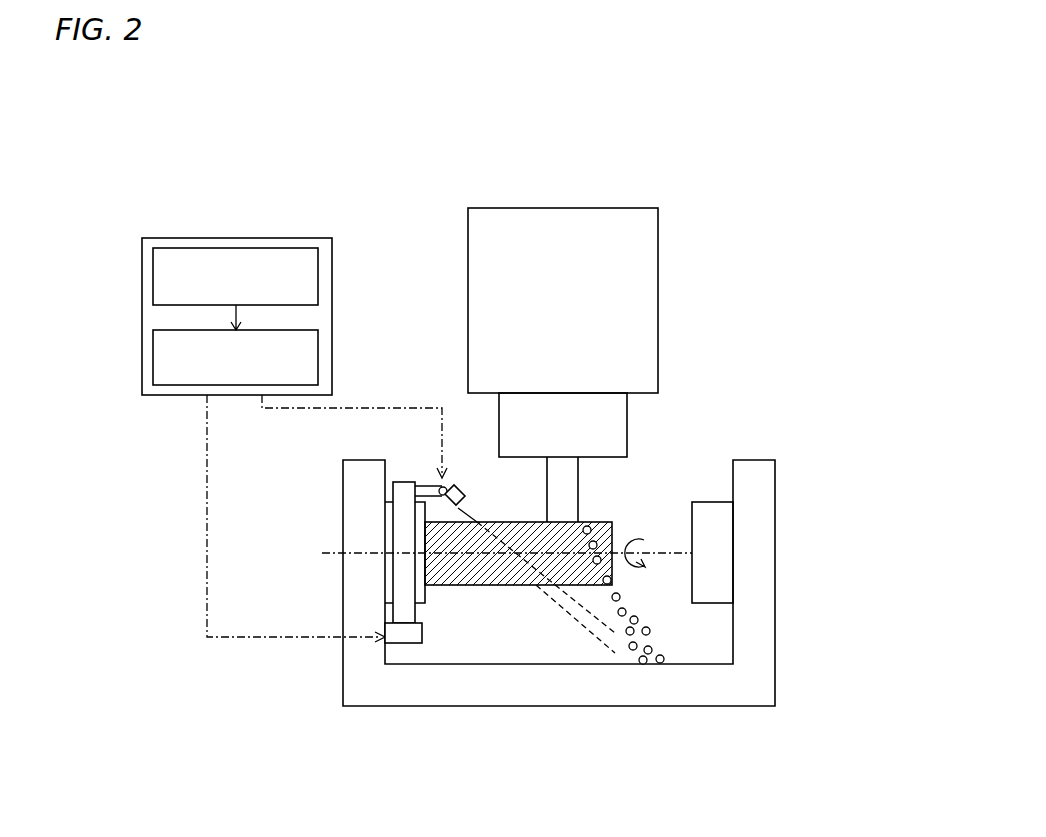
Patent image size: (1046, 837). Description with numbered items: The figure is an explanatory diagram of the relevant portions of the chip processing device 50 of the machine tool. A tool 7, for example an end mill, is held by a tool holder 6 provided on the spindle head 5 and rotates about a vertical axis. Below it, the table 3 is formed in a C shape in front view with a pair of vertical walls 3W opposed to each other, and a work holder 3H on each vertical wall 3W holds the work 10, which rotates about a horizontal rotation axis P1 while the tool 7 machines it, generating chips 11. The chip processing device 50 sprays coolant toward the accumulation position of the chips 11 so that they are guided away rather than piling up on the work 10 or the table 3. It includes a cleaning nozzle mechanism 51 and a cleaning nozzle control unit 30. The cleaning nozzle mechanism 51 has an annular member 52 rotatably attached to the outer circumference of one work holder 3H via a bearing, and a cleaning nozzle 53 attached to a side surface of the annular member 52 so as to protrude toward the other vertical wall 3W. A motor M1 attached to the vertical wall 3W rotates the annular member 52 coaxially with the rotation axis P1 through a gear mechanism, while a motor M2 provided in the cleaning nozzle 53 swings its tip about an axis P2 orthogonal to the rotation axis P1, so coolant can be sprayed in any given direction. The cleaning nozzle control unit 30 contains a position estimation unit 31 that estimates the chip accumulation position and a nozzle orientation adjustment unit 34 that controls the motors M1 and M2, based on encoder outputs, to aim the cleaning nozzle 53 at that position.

The table 3 is at (562, 606).
The vertical walls 3W is at (347, 500).
The work holder 3H is at (387, 598).
The spindle head 5 is at (658, 268).
The tool holder 6 is at (627, 430).
The tool 7 is at (578, 490).
The work 10 is at (513, 585).
The chips 11 is at (638, 618).
The cleaning nozzle control unit 30 is at (261, 284).
The position estimation unit 31 is at (318, 277).
The nozzle orientation adjustment unit 34 is at (318, 354).
The chip processing device 50 is at (294, 407).
The cleaning nozzle mechanism 51 is at (419, 460).
The annular member 52 is at (405, 480).
The cleaning nozzle 53 is at (471, 474).
The motor M1 is at (422, 632).
The motor M2 is at (447, 481).
The rotation axis P1 is at (494, 555).
The axis P2 is at (460, 494).